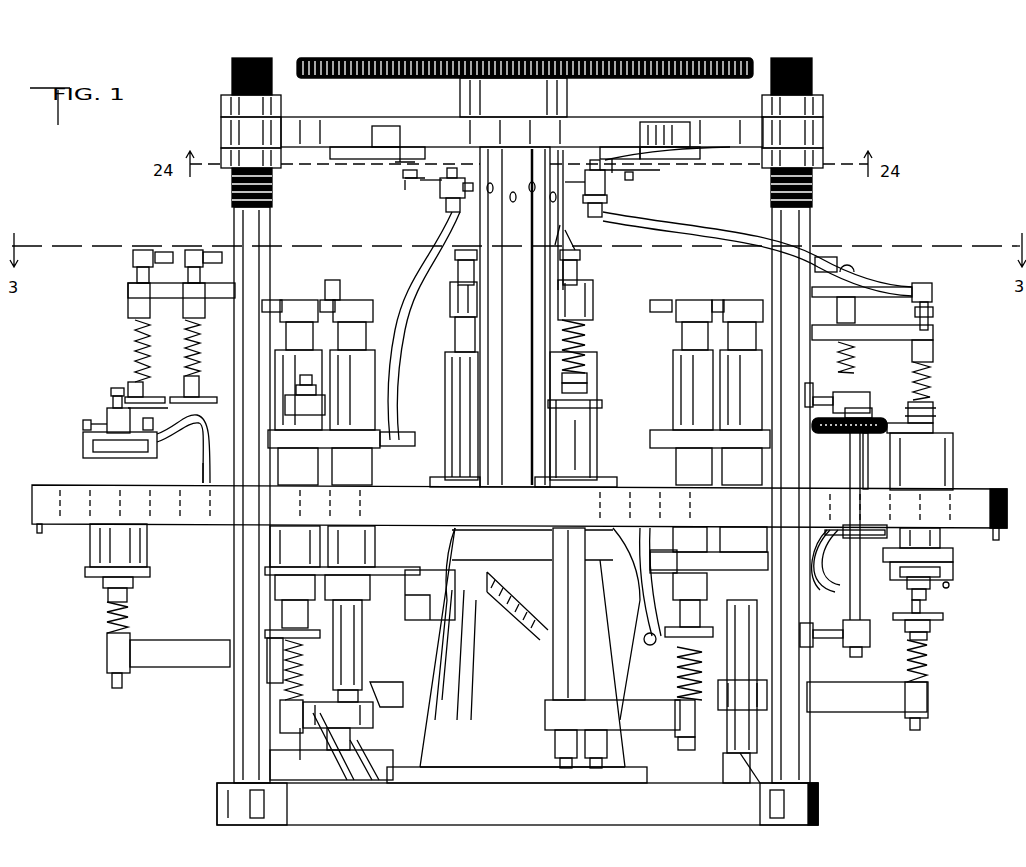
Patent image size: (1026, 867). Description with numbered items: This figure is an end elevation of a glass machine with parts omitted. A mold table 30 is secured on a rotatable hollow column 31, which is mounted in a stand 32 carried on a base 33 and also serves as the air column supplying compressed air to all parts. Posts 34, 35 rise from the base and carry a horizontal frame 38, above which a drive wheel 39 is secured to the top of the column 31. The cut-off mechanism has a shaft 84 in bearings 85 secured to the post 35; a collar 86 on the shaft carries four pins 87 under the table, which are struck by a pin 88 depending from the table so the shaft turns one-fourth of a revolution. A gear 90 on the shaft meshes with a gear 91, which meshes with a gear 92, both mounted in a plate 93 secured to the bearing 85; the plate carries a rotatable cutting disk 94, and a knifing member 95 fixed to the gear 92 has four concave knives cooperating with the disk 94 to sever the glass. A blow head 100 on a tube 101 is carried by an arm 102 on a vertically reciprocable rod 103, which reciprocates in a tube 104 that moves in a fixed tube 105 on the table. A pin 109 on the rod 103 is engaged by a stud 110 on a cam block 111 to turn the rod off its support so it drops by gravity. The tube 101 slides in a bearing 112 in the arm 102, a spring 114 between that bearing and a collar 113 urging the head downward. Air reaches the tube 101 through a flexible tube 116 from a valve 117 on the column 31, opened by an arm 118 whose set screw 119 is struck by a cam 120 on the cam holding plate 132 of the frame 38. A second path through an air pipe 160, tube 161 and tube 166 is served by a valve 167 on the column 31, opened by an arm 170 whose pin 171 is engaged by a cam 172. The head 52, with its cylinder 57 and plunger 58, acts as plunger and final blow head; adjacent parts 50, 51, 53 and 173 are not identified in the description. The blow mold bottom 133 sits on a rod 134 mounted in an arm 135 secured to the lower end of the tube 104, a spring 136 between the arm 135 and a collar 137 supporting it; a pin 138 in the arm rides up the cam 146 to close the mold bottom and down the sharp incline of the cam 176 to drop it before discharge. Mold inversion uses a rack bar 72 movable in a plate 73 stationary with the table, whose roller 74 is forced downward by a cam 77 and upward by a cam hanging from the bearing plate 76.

The mold table 30 is at (45, 483).
The hollow column 31 is at (502, 398).
The stand 32 is at (450, 664).
The base 33 is at (523, 814).
The post 34 is at (245, 725).
The post 35 is at (808, 750).
The horizontal frame 38 is at (390, 130).
The drive wheel 39 is at (637, 60).
The valve body 50 is at (85, 447).
The valve plate 51 is at (156, 441).
The head 52 is at (83, 427).
The valve tube 53 is at (143, 452).
The cylinder 57 is at (107, 409).
The plunger 58 is at (111, 396).
The rack bar 72 is at (650, 629).
The plate 73 is at (415, 605).
The roller 74 is at (644, 646).
The bearing plate 76 is at (505, 547).
The cam 77 is at (525, 622).
The shaft 84 is at (850, 466).
The bearings 85 is at (870, 403).
The collar 86 is at (865, 526).
The pins 87 is at (830, 585).
The pin 88 is at (1004, 552).
The gear 90 is at (875, 461).
The gear 91 is at (838, 433).
The gear 92 is at (825, 433).
The plate 93 is at (933, 407).
The round cutter or disk 94 is at (933, 426).
The knifing member 95 is at (936, 461).
The blow head 100 is at (190, 396).
The tube 101 is at (135, 331).
The arm 102 is at (311, 298).
The vertically reciprocable rod 103 is at (452, 333).
The tube 104 is at (351, 643).
The fixed tube 105 is at (449, 369).
The pin 109 is at (372, 772).
The stud 110 is at (716, 765).
The cam block 111 is at (738, 771).
The bearing 112 is at (127, 298).
The collar 113 is at (135, 274).
The spring 114 is at (190, 352).
The flexible tube 116 is at (205, 252).
The valve 117 is at (607, 188).
The arm 118 is at (612, 155).
The set screw 119 is at (648, 180).
The cam 120 is at (704, 150).
The cam holding plate 132 is at (640, 137).
The blow mold bottom 133 is at (130, 576).
The rod 134 is at (122, 681).
The arm 135 is at (180, 648).
The spring 136 is at (927, 673).
The collar 137 is at (927, 637).
The pin 138 is at (595, 767).
The cam 146 is at (446, 706).
The air pipe 160 is at (145, 410).
The tube 161 is at (200, 467).
The tube 166 is at (410, 265).
The valve 167 is at (448, 210).
The arm 170 is at (442, 188).
The pin 171 is at (403, 180).
The cam 172 is at (398, 162).
The pin 173 is at (950, 586).
The cam 176 is at (320, 750).